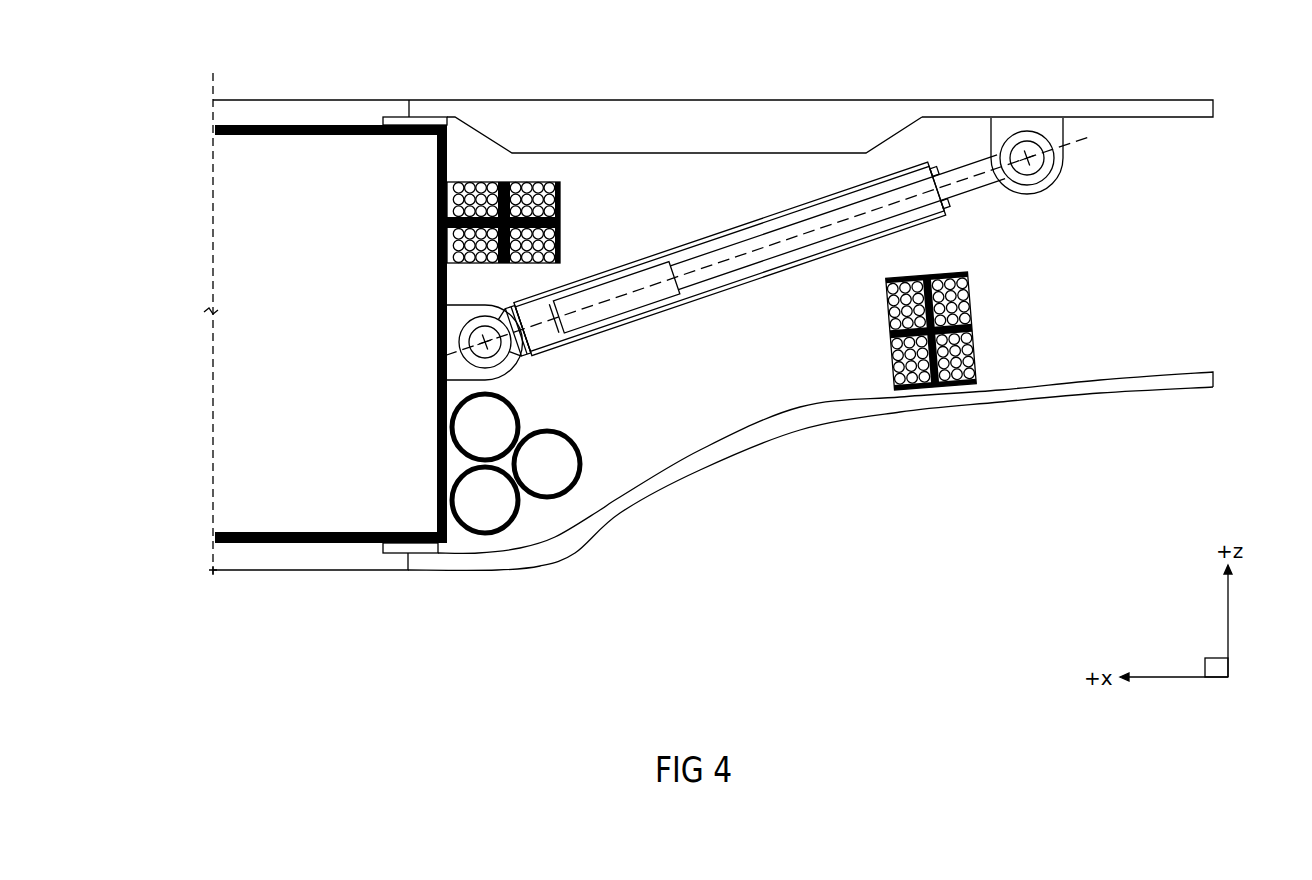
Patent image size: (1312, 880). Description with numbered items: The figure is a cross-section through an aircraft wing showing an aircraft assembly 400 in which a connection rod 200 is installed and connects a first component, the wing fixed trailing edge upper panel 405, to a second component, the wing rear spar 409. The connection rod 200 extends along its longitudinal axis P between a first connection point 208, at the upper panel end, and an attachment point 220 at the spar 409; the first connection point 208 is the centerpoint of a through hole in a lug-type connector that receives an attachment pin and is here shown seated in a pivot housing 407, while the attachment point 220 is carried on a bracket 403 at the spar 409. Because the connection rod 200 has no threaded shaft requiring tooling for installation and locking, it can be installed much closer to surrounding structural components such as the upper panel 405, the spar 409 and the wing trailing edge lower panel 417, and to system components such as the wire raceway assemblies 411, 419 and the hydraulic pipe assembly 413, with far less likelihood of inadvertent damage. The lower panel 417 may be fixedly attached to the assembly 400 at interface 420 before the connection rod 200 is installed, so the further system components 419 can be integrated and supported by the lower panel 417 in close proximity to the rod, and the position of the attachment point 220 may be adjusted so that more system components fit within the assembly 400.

The wing fixed trailing edge upper panel 405 is at (515, 100).
The aircraft assembly 400 is at (698, 207).
The wire raceway assembly 411 is at (562, 207).
The pivot bracket 403 is at (468, 380).
The connection rod 200 is at (702, 300).
The longitudinal axis P is at (970, 178).
The attachment point 220 is at (485, 342).
The pivot housing 407 is at (1058, 163).
The first connection point 208 is at (1027, 158).
The hydraulic pipe assembly 413 is at (527, 513).
The wing trailing edge lower panel 417 is at (743, 435).
The wire raceway assembly 419 is at (937, 390).
The wing rear spar 409 is at (252, 543).
The interface 420 is at (422, 556).